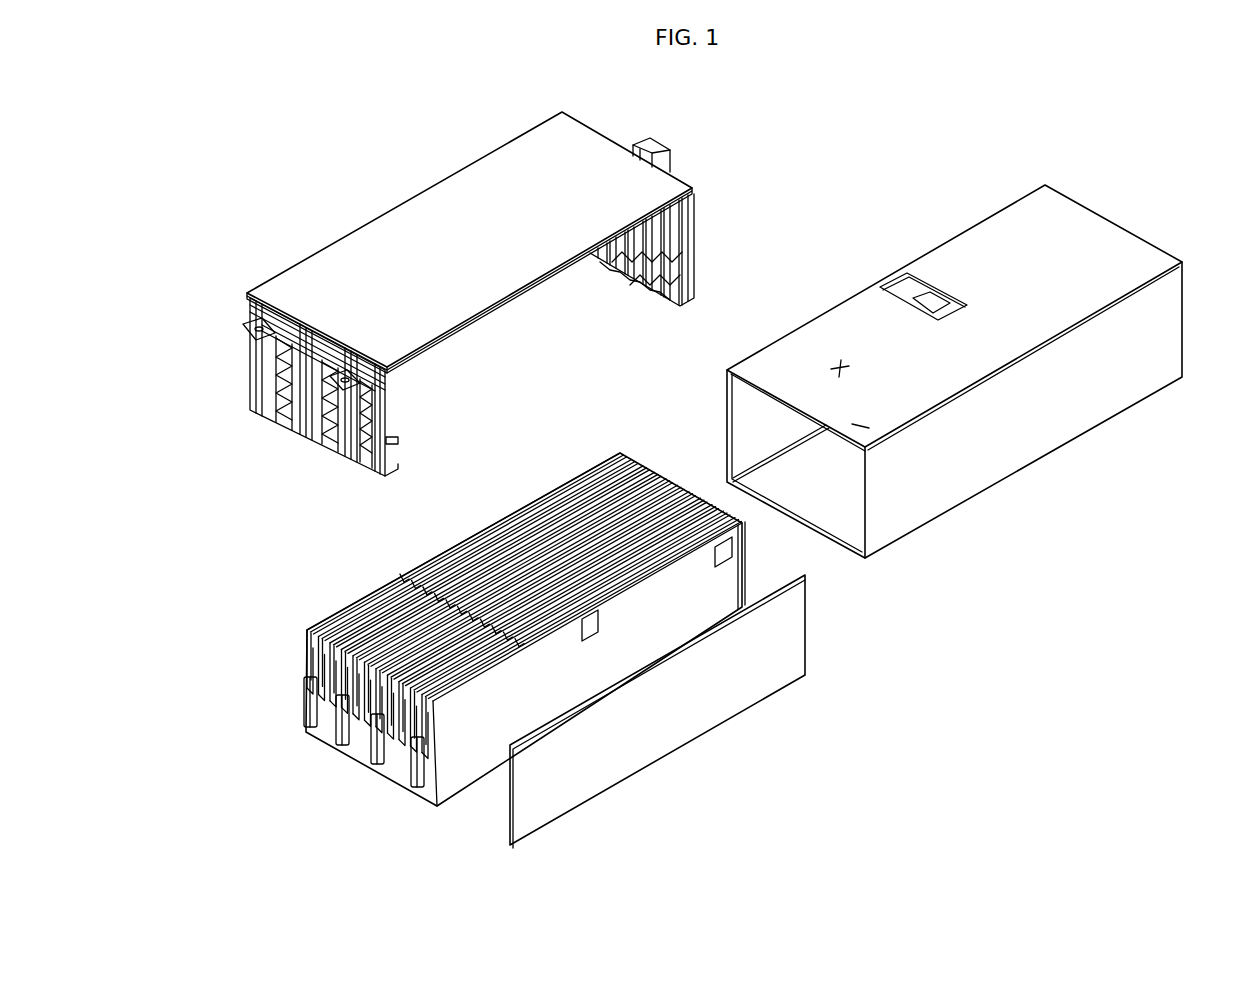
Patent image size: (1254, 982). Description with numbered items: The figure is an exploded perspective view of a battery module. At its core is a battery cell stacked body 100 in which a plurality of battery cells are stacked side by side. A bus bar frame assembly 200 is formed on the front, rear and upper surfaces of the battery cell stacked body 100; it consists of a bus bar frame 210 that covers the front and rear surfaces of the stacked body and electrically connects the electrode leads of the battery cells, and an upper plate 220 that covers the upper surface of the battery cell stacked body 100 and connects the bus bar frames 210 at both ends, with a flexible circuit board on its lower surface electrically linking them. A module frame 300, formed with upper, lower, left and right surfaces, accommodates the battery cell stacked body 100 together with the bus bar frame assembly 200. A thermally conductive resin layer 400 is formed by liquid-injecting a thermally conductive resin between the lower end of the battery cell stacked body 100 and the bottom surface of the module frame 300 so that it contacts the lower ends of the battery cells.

The battery cell stacked body 100 is at (357, 600).
The bus bar frame assembly 200 is at (423, 294).
The bus bar frame 210 is at (263, 367).
The upper plate 220 is at (330, 261).
The module frame 300 is at (1018, 433).
The thermally conductive resin layer 400 is at (830, 514).